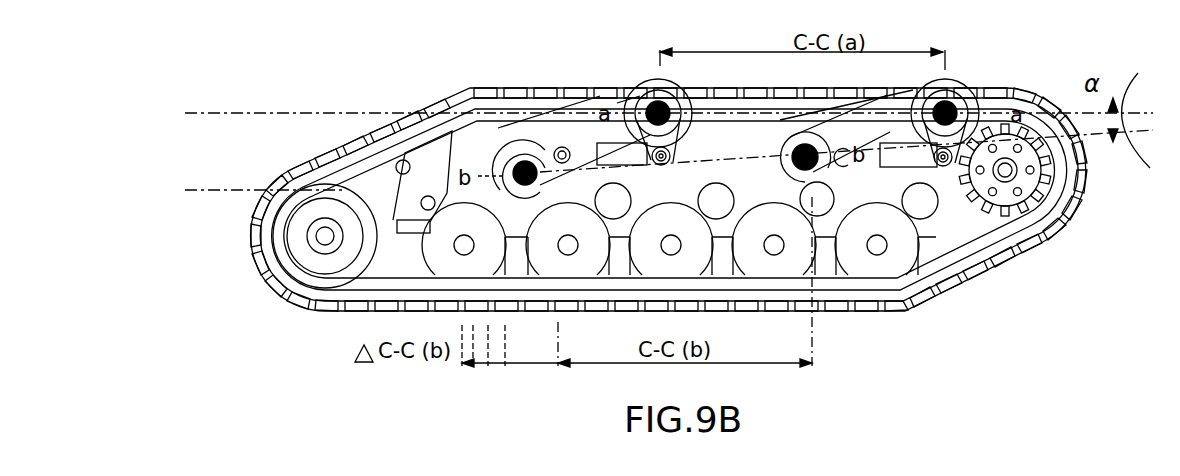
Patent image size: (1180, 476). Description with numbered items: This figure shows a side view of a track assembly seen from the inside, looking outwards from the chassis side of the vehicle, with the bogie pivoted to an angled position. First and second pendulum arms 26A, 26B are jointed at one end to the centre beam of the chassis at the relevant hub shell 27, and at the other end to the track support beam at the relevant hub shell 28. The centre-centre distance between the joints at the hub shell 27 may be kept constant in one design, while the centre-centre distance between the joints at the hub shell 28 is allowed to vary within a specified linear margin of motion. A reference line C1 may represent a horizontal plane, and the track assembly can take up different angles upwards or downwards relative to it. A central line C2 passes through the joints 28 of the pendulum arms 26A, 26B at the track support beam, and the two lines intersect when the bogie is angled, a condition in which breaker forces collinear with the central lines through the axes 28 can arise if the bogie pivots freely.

The first pendulum arm 26A is at (953, 80).
The second pendulum arm 26B is at (648, 80).
The hub shell 27 is at (625, 92).
The hub shell 28 is at (515, 180).
The reference line C1 is at (650, 113).
The central line C2 is at (246, 191).